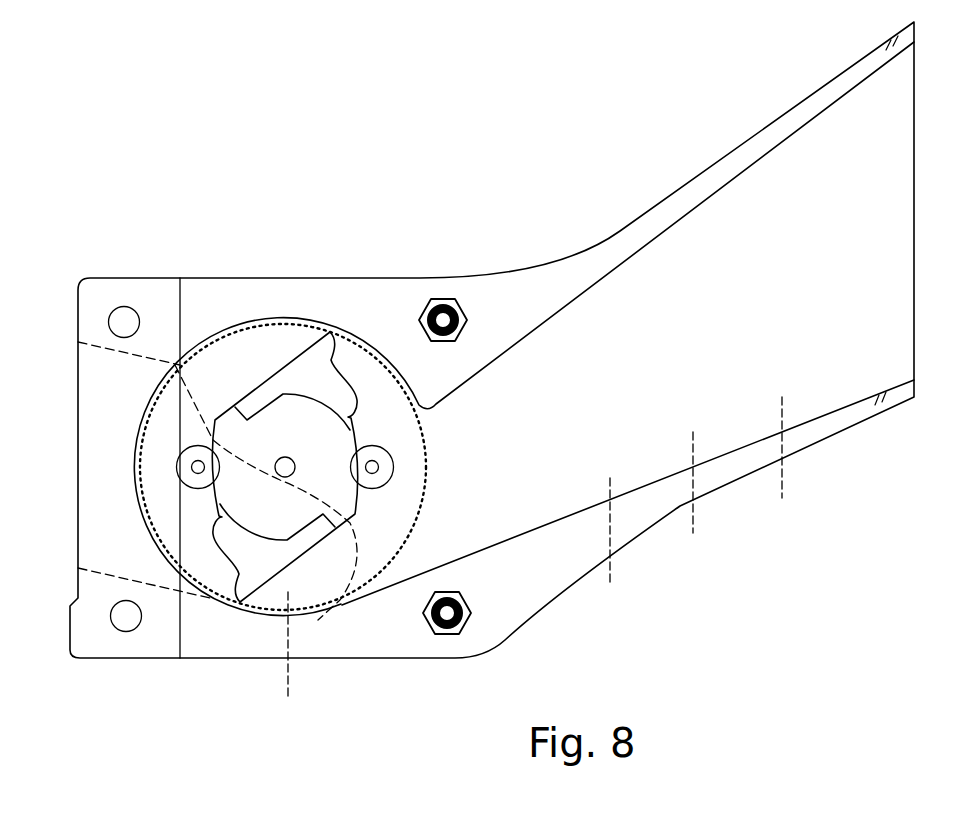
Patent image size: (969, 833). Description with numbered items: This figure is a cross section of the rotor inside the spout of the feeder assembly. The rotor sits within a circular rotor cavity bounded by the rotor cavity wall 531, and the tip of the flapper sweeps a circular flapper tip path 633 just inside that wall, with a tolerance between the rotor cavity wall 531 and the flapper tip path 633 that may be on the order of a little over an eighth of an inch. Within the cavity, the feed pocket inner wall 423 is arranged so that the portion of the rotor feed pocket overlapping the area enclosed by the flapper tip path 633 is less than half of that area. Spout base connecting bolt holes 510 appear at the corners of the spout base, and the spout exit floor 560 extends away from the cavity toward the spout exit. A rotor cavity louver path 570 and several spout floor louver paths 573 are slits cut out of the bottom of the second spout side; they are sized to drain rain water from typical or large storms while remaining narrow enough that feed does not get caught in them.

The spout base connecting bolt holes 510 is at (118, 308).
The rotor cavity wall 531 is at (419, 311).
The flapper tip path 633 is at (420, 428).
The feed pocket inner wall 423 is at (358, 557).
The spout exit floor 560 is at (835, 410).
The rotor cavity louver path 570 is at (290, 692).
The spout floor louver paths 573 is at (611, 580).